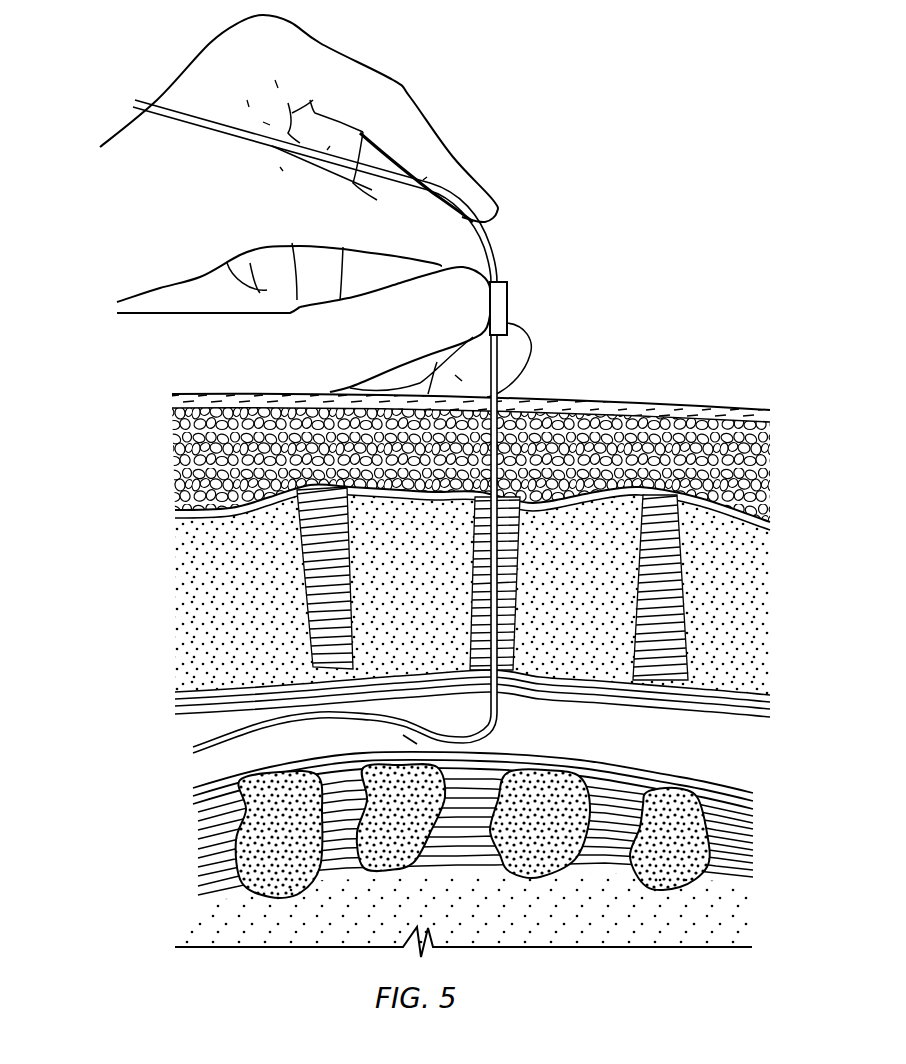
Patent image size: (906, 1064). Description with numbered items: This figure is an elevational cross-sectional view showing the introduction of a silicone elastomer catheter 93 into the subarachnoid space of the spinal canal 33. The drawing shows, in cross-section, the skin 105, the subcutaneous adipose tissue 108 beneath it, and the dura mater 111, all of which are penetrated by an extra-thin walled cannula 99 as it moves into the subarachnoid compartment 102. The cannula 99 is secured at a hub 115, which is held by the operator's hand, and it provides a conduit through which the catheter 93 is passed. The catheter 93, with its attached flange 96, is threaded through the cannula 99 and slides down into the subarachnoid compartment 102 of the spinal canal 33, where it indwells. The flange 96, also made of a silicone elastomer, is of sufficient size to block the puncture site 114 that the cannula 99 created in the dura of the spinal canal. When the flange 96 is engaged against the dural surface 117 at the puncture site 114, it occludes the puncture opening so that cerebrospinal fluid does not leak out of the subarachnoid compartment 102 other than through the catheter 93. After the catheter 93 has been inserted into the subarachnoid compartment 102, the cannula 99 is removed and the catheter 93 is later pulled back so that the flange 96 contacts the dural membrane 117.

The spinal canal 33 is at (708, 745).
The catheter 93 is at (267, 725).
The flange 96 is at (423, 725).
The cannula 99 is at (483, 542).
The subarachnoid compartment 102 is at (690, 765).
The skin 105 is at (643, 404).
The subcutaneous adipose tissue 108 is at (563, 427).
The dura mater 111 is at (727, 694).
The puncture site 114 is at (507, 657).
The hub 115 is at (509, 296).
The dural surface 117 is at (570, 675).